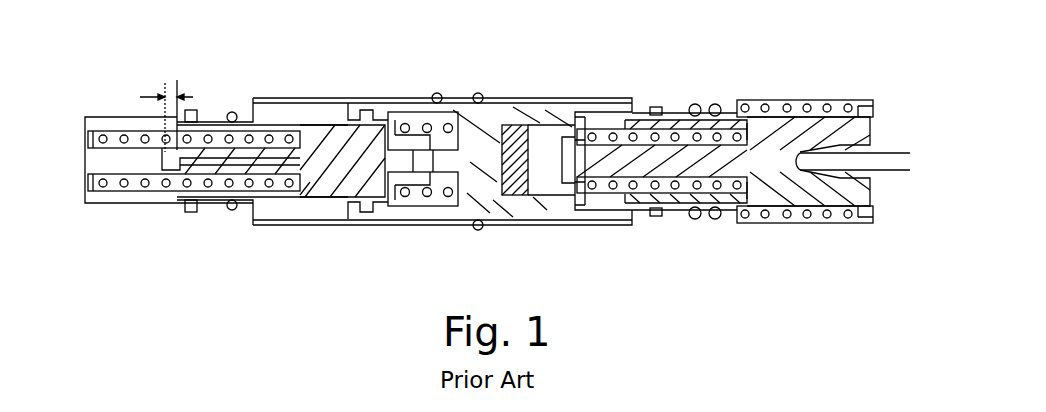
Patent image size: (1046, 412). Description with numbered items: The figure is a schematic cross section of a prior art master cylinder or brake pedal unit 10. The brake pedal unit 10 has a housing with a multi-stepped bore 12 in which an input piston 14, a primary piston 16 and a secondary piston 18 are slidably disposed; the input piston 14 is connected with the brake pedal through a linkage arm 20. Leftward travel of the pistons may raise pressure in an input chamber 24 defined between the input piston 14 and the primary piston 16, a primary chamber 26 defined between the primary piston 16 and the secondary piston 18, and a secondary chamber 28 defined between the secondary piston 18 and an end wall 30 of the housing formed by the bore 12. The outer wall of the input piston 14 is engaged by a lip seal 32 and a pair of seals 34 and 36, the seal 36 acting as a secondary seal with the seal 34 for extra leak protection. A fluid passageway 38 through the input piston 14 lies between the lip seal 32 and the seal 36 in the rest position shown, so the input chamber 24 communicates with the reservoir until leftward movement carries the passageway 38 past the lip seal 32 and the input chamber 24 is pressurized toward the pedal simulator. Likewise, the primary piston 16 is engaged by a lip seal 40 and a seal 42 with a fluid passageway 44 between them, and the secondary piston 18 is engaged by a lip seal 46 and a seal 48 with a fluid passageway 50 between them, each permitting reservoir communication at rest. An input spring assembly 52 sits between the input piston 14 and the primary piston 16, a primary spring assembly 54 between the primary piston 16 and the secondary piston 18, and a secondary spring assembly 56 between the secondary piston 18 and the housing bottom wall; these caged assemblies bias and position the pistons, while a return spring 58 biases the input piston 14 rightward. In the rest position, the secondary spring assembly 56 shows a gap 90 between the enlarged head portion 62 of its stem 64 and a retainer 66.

The brake pedal unit 10 is at (918, 84).
The multi-stepped bore 12 is at (772, 222).
The input piston 14 is at (807, 125).
The primary piston 16 is at (492, 200).
The secondary piston 18 is at (327, 160).
The linkage arm 20 is at (883, 152).
The input chamber 24 is at (610, 123).
The primary chamber 26 is at (333, 108).
The secondary chamber 28 is at (110, 128).
The end wall 30 is at (107, 200).
The lip seal 32 is at (652, 108).
The seal 34 is at (718, 108).
The seal 36 is at (697, 106).
The fluid passageway 38 is at (675, 125).
The lip seal 40 is at (432, 98).
The seal 42 is at (478, 93).
The fluid passageway 44 is at (437, 98).
The lip seal 46 is at (193, 112).
The seal 48 is at (236, 115).
The fluid passageway 50 is at (210, 126).
The input spring assembly 52 is at (680, 193).
The primary spring assembly 54 is at (408, 198).
The secondary spring assembly 56 is at (253, 193).
The return spring 58 is at (806, 220).
The enlarged head portion 62 is at (182, 152).
The stem 64 is at (222, 160).
The retainer 66 is at (97, 170).
The gap 90 is at (176, 95).